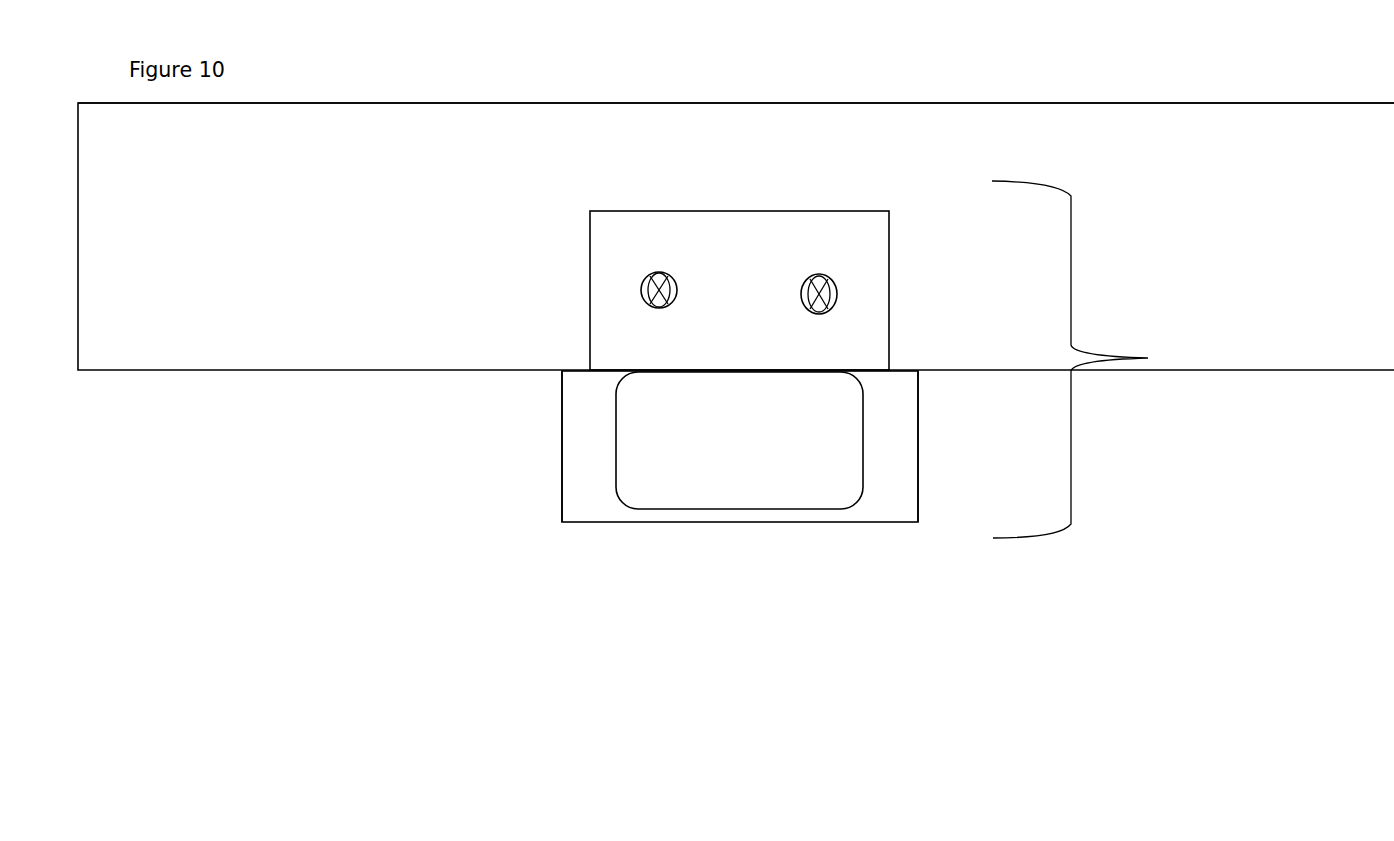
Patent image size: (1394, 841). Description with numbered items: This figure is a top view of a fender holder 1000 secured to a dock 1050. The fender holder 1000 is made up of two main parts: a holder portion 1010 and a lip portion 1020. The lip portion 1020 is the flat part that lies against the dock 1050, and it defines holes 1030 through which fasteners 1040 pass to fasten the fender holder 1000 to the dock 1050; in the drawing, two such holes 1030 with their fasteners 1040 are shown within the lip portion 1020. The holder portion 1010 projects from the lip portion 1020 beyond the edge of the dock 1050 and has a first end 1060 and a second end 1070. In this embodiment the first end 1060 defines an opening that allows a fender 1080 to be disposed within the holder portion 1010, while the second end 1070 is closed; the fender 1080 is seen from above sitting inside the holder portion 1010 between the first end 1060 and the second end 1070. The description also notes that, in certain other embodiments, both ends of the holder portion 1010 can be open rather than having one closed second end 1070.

The fender holder 1000 is at (736, 320).
The holder portion 1010 is at (817, 522).
The lip portion 1020 is at (867, 209).
The holes 1030 is at (820, 274).
The fasteners 1040 is at (822, 297).
The dock 1050 is at (736, 150).
The first end 1060 is at (561, 446).
The second end 1070 is at (918, 428).
The fender 1080 is at (680, 477).